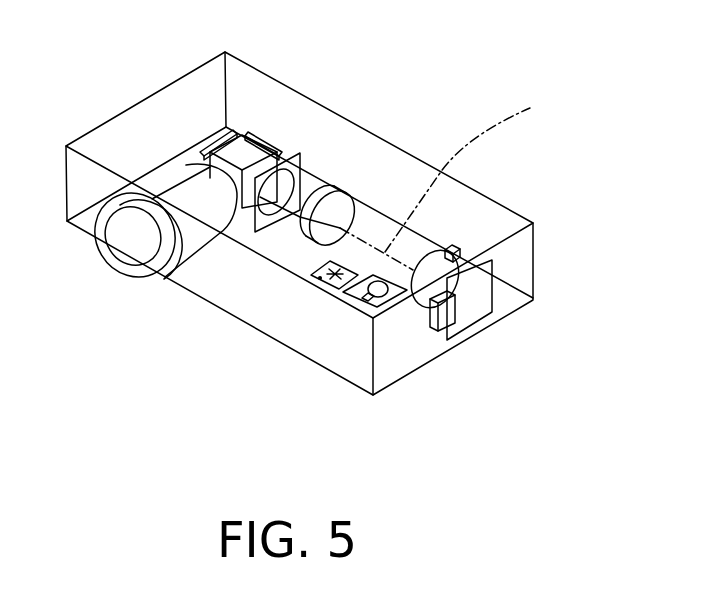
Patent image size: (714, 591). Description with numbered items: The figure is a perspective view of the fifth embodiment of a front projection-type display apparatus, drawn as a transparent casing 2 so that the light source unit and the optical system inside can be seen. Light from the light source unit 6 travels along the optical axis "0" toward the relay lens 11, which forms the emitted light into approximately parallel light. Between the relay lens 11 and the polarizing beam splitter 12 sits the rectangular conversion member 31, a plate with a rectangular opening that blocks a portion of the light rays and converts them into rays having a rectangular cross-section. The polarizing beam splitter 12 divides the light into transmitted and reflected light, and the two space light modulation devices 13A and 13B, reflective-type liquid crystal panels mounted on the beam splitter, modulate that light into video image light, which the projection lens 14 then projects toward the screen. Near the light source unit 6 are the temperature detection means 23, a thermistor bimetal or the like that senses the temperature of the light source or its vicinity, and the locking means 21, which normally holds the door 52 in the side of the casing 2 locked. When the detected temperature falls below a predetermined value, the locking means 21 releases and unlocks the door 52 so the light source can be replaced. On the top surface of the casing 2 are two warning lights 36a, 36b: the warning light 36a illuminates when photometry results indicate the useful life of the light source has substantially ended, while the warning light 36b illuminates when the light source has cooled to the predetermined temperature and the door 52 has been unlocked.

The casing 2 is at (415, 182).
The optical axis 0 is at (455, 174).
The light source unit 6 is at (434, 260).
The relay lens 11 is at (323, 196).
The polarizing beam splitter 12 is at (242, 160).
The space light modulation device 13A is at (260, 152).
The space light modulation device 13B is at (230, 133).
The projection lens 14 is at (137, 233).
The locking means 21 is at (434, 331).
The temperature detection means 23 is at (459, 250).
The rectangular conversion member 31 is at (302, 157).
The warning light 36a is at (345, 296).
The warning light 36b is at (317, 272).
The door 52 is at (477, 315).